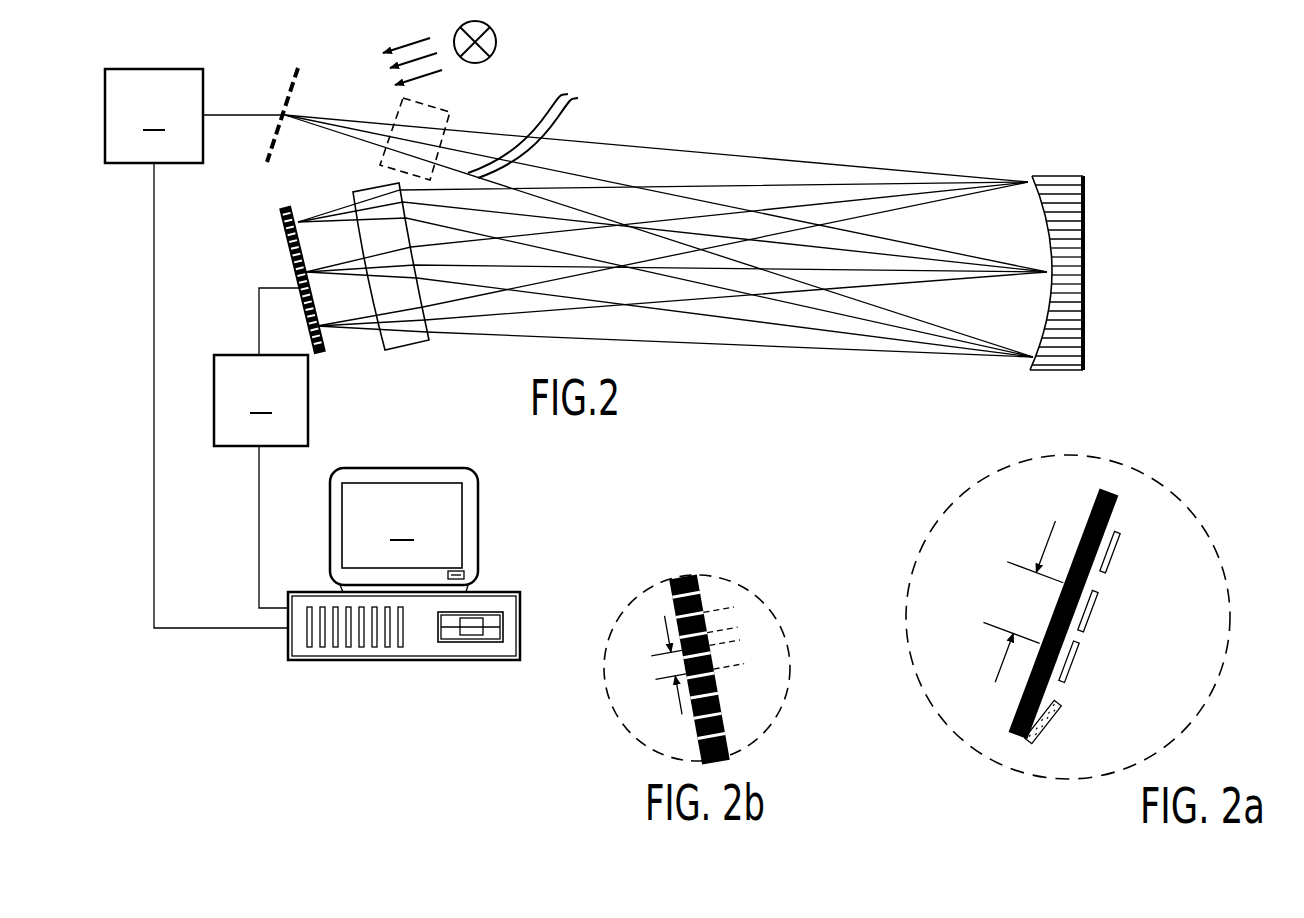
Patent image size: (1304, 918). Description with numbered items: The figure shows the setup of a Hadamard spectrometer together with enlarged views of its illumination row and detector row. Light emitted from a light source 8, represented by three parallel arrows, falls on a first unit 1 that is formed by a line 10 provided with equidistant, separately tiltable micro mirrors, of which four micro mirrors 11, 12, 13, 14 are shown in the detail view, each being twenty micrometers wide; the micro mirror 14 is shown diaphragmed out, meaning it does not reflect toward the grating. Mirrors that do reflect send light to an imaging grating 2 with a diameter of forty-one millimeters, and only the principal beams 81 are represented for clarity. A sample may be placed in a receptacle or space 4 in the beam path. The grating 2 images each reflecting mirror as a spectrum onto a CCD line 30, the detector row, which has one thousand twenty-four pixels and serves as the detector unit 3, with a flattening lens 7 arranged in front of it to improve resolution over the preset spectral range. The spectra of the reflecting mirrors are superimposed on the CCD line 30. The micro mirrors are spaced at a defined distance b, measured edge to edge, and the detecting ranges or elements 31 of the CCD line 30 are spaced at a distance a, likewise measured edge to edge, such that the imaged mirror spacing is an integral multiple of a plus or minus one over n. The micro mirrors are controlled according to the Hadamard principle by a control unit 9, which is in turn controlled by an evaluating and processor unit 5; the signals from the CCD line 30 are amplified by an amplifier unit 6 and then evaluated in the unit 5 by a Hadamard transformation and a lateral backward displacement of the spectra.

In FIG. 2, the first unit 1 is at (295, 70).
In FIG. 2, the imaging grating 2 is at (1040, 180).
In FIG. 2, the detector unit 3 is at (285, 212).
In FIG. 2, the receptacle (space) 4 is at (425, 100).
In FIG. 2, the evaluating and processor unit 5 is at (404, 564).
In FIG. 2, the amplifier unit 6 is at (261, 400).
In FIG. 2, the flattening lens 7 is at (357, 192).
In FIG. 2, the light source 8 is at (497, 42).
In FIG. 2, the principal beams 81 is at (533, 122).
In FIG. 2, the control unit 9 is at (154, 116).
In FIG. 2A, the line 10 is at (1083, 510).
In FIG. 2A, the micro mirror 11 is at (1112, 568).
In FIG. 2A, the micro mirror 12 is at (1088, 622).
In FIG. 2A, the micro mirror 13 is at (1069, 673).
In FIG. 2A, the micro mirror 14 is at (1050, 728).
In FIG. 2B, the CCD line 30 is at (720, 580).
In FIG. 2B, the detecting range 31 is at (723, 625).